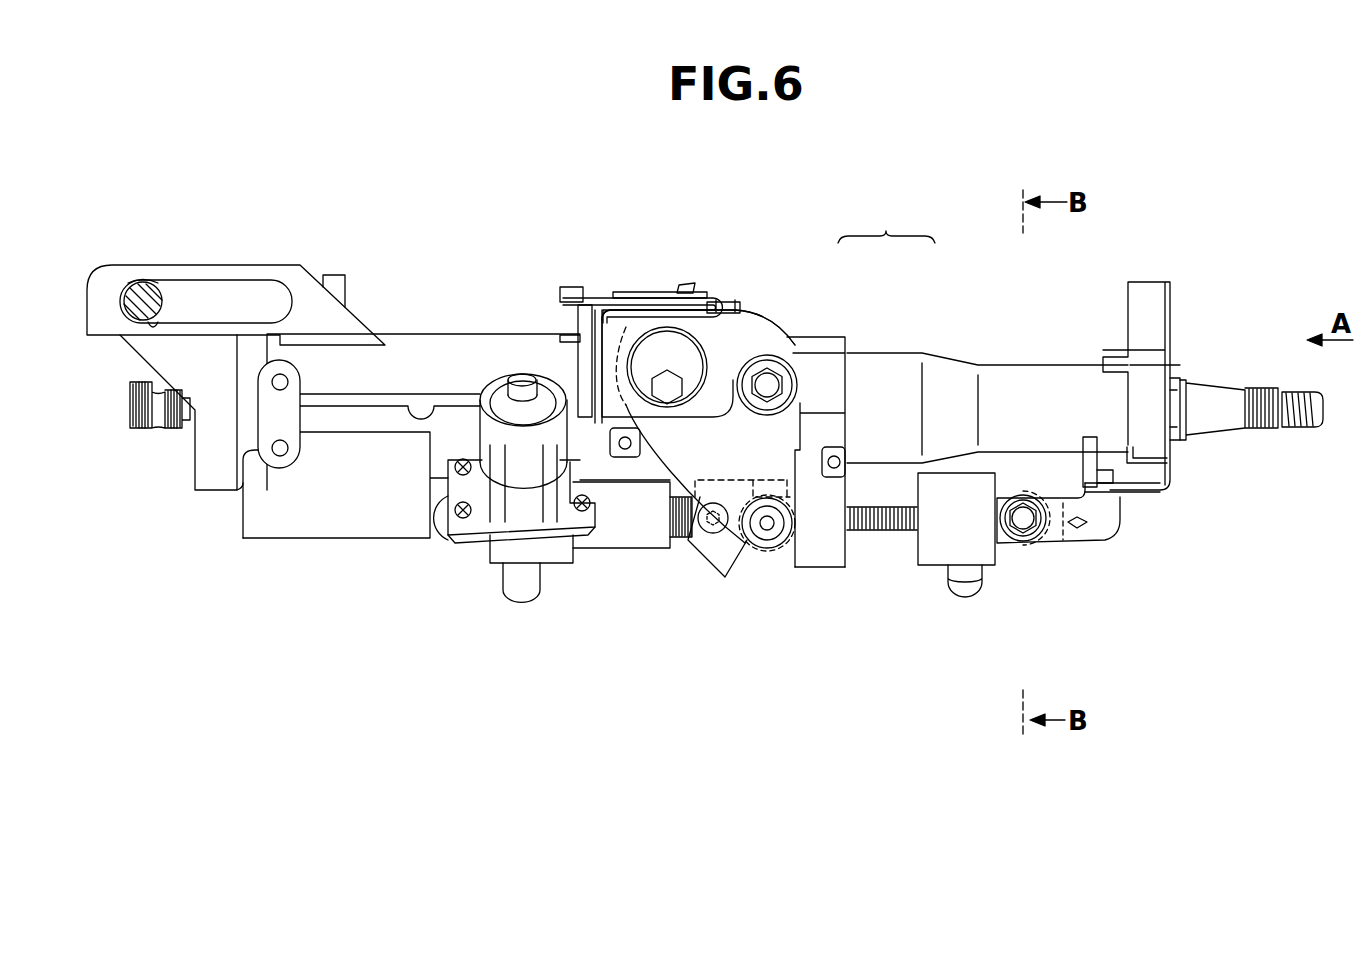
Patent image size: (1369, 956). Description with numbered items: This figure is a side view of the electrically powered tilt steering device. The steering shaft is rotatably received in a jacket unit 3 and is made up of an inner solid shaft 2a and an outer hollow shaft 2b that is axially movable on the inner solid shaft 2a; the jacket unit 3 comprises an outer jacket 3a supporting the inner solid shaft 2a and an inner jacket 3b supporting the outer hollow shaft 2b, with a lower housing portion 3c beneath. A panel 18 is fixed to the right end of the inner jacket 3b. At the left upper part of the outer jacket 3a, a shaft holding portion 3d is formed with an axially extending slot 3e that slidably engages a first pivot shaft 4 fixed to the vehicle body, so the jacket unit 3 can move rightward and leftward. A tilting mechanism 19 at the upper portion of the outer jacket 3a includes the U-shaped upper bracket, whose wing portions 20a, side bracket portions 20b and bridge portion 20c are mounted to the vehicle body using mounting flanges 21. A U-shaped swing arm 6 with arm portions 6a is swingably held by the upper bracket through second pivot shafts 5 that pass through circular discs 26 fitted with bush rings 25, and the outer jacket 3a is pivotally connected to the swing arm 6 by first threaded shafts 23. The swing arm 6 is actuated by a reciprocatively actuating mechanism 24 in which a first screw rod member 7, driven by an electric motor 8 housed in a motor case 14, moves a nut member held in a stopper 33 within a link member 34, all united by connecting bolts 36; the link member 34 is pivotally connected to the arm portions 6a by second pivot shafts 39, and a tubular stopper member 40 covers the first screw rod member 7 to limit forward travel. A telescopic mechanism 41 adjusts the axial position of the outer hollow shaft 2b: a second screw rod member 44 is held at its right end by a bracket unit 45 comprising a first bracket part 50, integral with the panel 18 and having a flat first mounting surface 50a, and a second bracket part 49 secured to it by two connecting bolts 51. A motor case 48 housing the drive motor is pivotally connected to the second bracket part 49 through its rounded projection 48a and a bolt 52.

The inner solid shaft 2a is at (142, 430).
The outer hollow shaft 2b is at (1217, 396).
The jacket unit 3 is at (983, 332).
The outer jacket 3a is at (840, 340).
The inner jacket 3b is at (905, 352).
The column housing lower portion 3c is at (828, 566).
The shaft holding portion 3d is at (266, 272).
The axially extending slot 3e is at (200, 296).
The first pivot shaft 4 is at (143, 290).
The second pivot shaft 5 is at (667, 384).
The U-shaped swing arm 6 is at (757, 310).
The arm portion 6a is at (710, 297).
The first screw rod member 7 is at (683, 540).
The electric motor 8 is at (492, 383).
The motor case 14 is at (498, 566).
The panel 18 is at (1172, 300).
The tilting mechanism 19 is at (723, 208).
The wing portion 20a is at (607, 296).
The side bracket portion 20b is at (585, 340).
The bridge portion 20c is at (568, 287).
The mounting flange 21 is at (627, 292).
The first threaded shaft 23 is at (787, 358).
The reciprocatively actuating mechanism 24 is at (653, 587).
The bush ring 25 is at (718, 300).
The circular disc 26 is at (684, 288).
The stopper 33 is at (742, 550).
The link member 34 is at (706, 530).
The connecting bolt 36 is at (716, 534).
The second pivot shaft 39 is at (769, 532).
The tubular stopper member 40 is at (615, 547).
The telescopic mechanism 41 is at (958, 606).
The second screw rod member 44 is at (880, 530).
The bracket unit 45 is at (1127, 623).
The motor case 48 is at (930, 565).
The rounded projection 48a is at (1005, 547).
The second bracket part 49 is at (1110, 525).
The first bracket part 50 is at (1082, 540).
The first mounting surface 50a is at (1128, 498).
The connecting bolt 51 is at (1100, 470).
The bolt 52 is at (1027, 510).